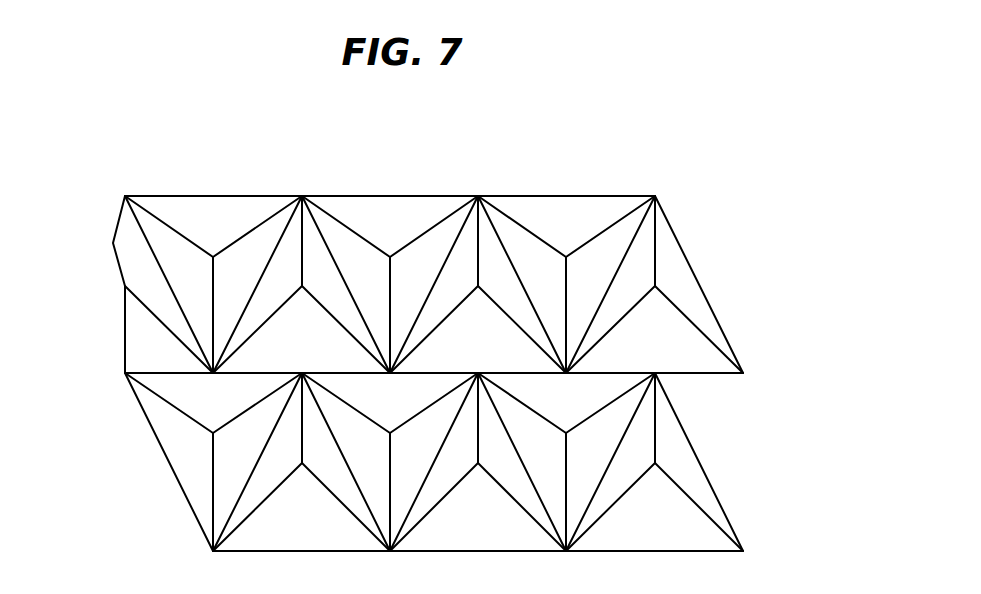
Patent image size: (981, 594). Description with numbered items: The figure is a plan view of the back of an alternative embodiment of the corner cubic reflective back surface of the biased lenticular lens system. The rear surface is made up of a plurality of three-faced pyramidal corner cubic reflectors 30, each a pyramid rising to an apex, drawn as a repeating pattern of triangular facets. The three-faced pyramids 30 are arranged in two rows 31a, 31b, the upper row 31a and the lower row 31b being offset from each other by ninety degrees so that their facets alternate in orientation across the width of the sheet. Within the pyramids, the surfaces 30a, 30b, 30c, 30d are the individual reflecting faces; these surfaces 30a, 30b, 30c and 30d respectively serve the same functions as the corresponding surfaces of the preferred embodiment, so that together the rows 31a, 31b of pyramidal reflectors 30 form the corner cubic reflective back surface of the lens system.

The three-faced pyramidal corner cubic reflector 30 is at (171, 253).
The surface 30a is at (160, 265).
The surface 30b is at (272, 258).
The surface 30c is at (338, 270).
The surface 30d is at (448, 259).
The row 31a is at (444, 253).
The row 31b is at (719, 427).